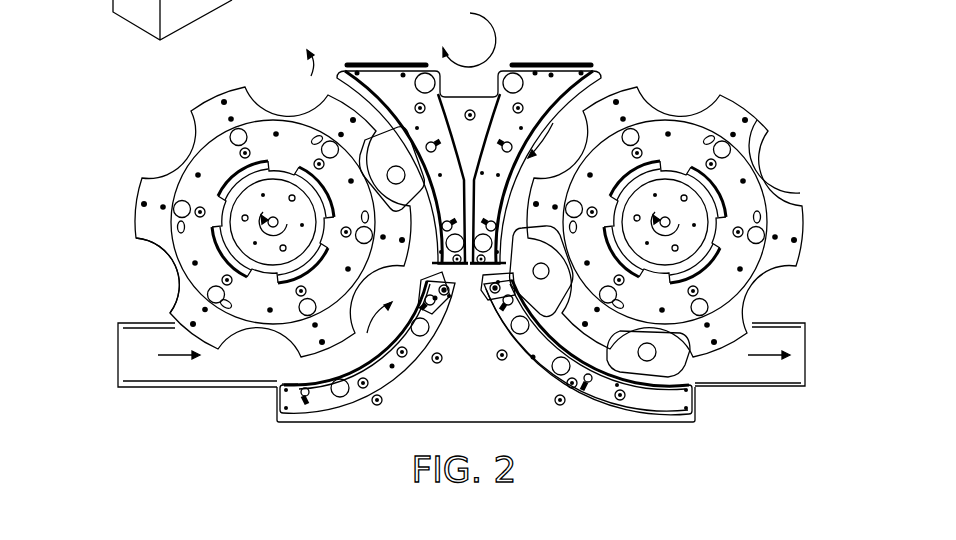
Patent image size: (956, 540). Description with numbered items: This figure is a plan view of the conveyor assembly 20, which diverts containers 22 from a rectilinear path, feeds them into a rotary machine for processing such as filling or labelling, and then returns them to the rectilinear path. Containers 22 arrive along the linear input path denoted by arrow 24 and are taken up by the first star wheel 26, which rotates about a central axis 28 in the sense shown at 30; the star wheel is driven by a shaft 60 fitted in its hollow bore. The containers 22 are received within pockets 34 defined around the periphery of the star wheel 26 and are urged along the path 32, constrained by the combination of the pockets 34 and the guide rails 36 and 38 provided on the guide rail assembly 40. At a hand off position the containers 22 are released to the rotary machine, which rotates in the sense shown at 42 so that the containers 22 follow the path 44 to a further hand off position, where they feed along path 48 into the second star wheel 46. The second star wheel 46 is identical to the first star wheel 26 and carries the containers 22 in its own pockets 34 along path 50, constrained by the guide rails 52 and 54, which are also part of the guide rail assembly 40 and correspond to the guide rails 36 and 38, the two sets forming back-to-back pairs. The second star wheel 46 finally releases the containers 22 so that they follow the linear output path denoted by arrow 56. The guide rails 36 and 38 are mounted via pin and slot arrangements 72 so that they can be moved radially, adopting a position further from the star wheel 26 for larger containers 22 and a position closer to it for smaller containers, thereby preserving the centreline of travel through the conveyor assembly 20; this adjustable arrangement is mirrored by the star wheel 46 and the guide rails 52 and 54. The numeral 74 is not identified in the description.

The conveyor assembly 20 is at (562, 40).
The container 22 is at (381, 160).
The linear input path 24 is at (175, 357).
The first star wheel 26 is at (200, 108).
The central axis 28 is at (328, 205).
The rotation sense of first star wheel 30 is at (244, 172).
The path 32 is at (392, 370).
The pocket 34 is at (163, 265).
The guide rail 36 is at (290, 384).
The guide rail 38 is at (345, 62).
The guide rail assembly 40 is at (408, 412).
The rotation sense of rotary machine 42 is at (498, 30).
The path 44 is at (340, 88).
The second star wheel 46 is at (752, 108).
The path 48 is at (603, 84).
The path 50 is at (548, 130).
The guide rail 52 is at (557, 80).
The guide rail 54 is at (640, 385).
The linear output path 56 is at (762, 357).
The shaft 60 is at (258, 240).
The pin and slot arrangement 72 is at (497, 145).
The container opening 74 is at (547, 265).